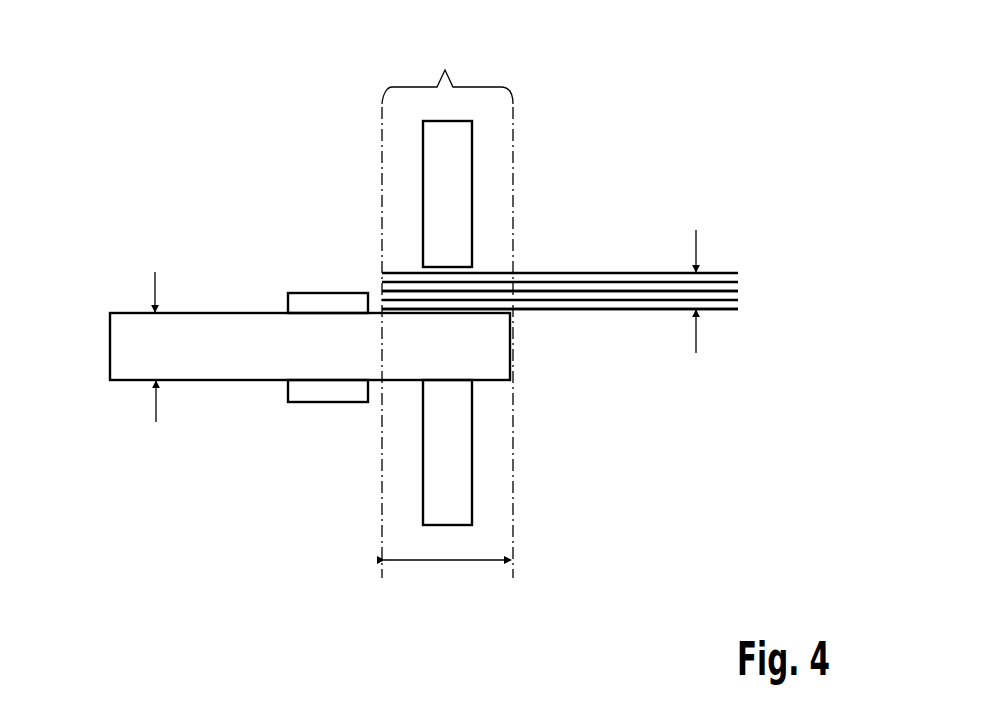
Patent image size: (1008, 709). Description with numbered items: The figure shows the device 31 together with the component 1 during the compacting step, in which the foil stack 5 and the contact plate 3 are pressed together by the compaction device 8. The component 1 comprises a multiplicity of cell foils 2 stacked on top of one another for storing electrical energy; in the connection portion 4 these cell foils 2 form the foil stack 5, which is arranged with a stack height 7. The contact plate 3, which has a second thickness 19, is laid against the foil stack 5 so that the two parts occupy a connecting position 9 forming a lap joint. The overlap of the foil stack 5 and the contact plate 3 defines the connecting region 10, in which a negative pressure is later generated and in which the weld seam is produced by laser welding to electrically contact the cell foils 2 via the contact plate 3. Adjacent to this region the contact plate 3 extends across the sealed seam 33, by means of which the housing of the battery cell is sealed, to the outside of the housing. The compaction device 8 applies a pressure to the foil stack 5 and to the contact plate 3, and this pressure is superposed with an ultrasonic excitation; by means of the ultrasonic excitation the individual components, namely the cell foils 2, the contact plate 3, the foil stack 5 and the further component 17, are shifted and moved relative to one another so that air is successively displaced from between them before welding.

The component 1 is at (628, 243).
The cell foils 2 is at (617, 309).
The contact plate 3 is at (226, 332).
The connection portion 4 is at (452, 560).
The foil stack 5 is at (747, 273).
The stack height 7 is at (696, 243).
The compaction device 8 is at (457, 157).
The connecting position 9 is at (333, 235).
The connecting region 10 is at (447, 70).
The individual component 17 is at (713, 293).
The second thickness 19 is at (153, 286).
The device 31 is at (635, 187).
The sealed seam 33 is at (332, 392).